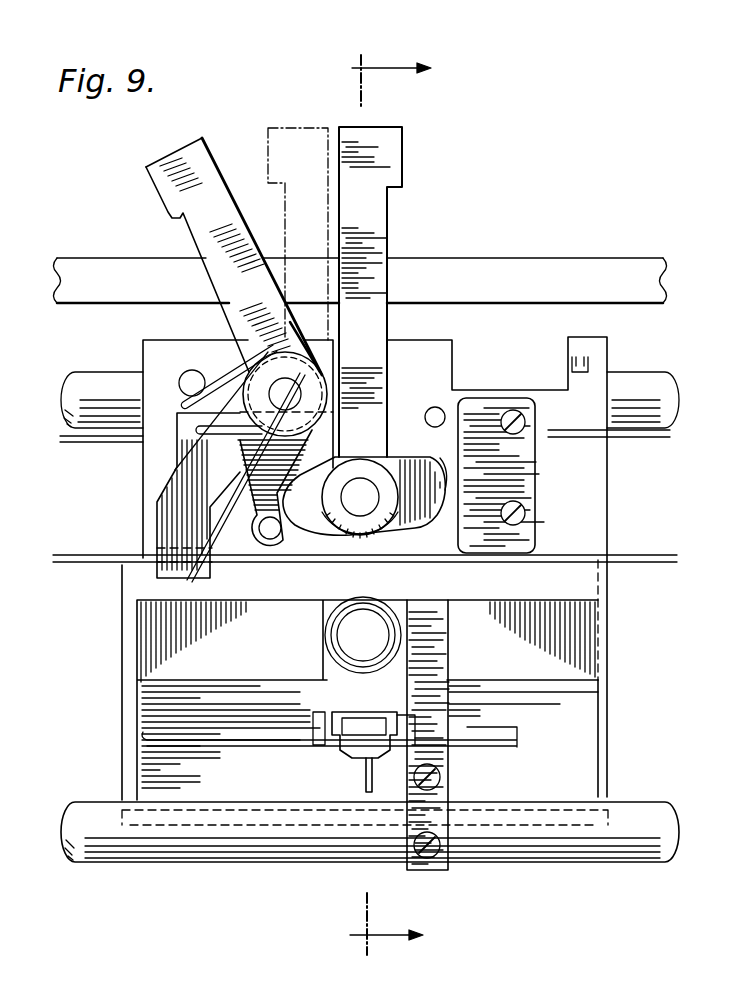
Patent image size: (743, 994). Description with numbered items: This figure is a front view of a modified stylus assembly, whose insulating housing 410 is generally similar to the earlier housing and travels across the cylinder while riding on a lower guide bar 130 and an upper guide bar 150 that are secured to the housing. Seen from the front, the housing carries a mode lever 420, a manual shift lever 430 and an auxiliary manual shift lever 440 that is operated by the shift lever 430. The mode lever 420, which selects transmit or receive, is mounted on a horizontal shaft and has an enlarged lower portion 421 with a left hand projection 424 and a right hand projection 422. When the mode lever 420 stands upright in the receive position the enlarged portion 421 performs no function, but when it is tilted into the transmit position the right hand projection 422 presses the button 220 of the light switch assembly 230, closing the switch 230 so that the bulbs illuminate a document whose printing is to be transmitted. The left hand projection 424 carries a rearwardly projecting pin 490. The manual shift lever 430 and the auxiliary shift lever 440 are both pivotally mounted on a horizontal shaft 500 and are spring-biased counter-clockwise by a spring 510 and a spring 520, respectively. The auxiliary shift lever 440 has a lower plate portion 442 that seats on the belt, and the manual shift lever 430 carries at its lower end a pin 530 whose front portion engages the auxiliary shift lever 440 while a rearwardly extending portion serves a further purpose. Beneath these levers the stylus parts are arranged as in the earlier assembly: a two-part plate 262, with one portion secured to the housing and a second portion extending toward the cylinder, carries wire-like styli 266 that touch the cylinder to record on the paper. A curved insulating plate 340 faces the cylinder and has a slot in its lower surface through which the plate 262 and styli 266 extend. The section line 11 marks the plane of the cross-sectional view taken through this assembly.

The section line 11 is at (406, 505).
The lower guide bar 130 is at (123, 867).
The upper guide bar 150 is at (100, 378).
The button 220 is at (450, 483).
The light switch assembly 230 is at (513, 467).
The two-part plate 262 is at (353, 755).
The styli 266 is at (365, 790).
The curved insulating plate 340 is at (608, 738).
The insulating housing 410 is at (143, 478).
The mode lever 420 is at (392, 153).
The enlarged lower portion 421 is at (398, 463).
The right hand projection 422 is at (432, 525).
The left hand projection 424 is at (330, 536).
The manual shift lever 430 is at (173, 158).
The auxiliary manual shift lever 440 is at (163, 500).
The lower plate portion 442 is at (160, 550).
The rearwardly projecting pin 490 is at (297, 525).
The horizontal shaft 500 is at (293, 384).
The spring 510 is at (268, 330).
The spring 520 is at (222, 442).
The pin 530 is at (268, 540).